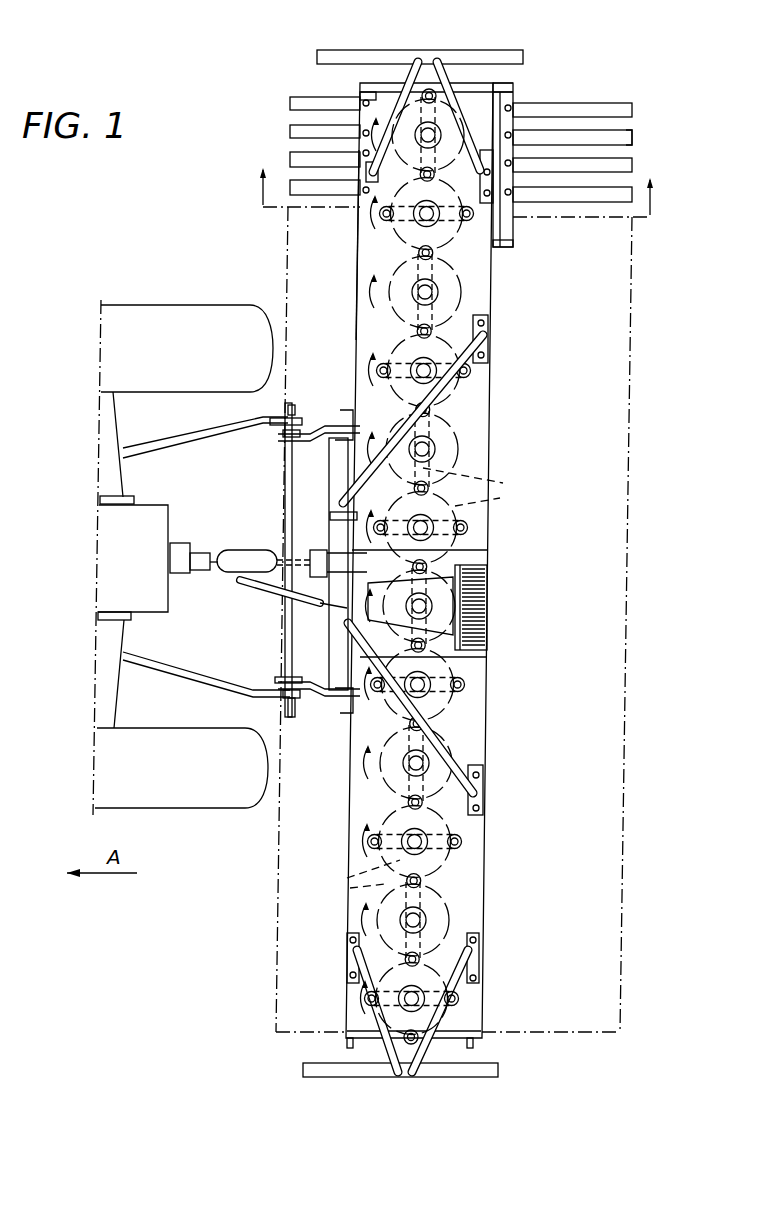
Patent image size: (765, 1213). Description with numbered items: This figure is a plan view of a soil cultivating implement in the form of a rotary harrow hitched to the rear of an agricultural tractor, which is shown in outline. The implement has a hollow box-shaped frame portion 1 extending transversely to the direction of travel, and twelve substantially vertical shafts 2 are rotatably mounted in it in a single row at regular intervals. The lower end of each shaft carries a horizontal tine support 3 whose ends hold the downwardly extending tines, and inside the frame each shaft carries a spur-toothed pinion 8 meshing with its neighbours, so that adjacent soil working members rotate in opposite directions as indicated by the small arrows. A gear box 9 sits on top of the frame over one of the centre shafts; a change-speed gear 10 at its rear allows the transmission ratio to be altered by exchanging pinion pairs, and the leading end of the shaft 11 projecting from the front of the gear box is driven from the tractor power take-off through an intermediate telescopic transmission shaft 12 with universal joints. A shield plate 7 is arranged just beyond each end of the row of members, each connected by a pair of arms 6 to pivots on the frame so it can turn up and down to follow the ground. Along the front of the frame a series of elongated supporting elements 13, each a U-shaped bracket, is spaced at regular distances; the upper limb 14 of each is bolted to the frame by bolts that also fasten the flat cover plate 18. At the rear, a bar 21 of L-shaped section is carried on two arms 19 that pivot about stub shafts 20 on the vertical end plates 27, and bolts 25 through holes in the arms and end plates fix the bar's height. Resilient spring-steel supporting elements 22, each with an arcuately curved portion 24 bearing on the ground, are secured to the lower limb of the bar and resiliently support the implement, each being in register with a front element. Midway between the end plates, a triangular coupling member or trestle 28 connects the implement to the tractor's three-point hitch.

The hollow box-shaped frame portion 1 is at (492, 453).
The shaft 2 is at (446, 250).
The tine support 3 is at (325, 878).
The arm 6 is at (428, 56).
The shield plate 7 is at (380, 50).
The pinion 8 is at (375, 250).
The gear box 9 is at (452, 553).
The change-speed gear 10 is at (480, 587).
The shaft 11 is at (340, 612).
The intermediate telescopic transmission shaft 12 is at (260, 587).
The elongated supporting element 13 is at (285, 128).
The upper limb 14 is at (313, 85).
The upper wall or cover plate 18 is at (358, 337).
The arm 19 is at (512, 85).
The stub shaft 20 is at (367, 83).
The bar 21 is at (514, 231).
The elongated supporting element 22 is at (638, 133).
The arcuately curved portion 24 is at (628, 132).
The bolt 25 is at (492, 80).
The end plate 27 is at (474, 82).
The coupling member or trestle 28 is at (333, 475).